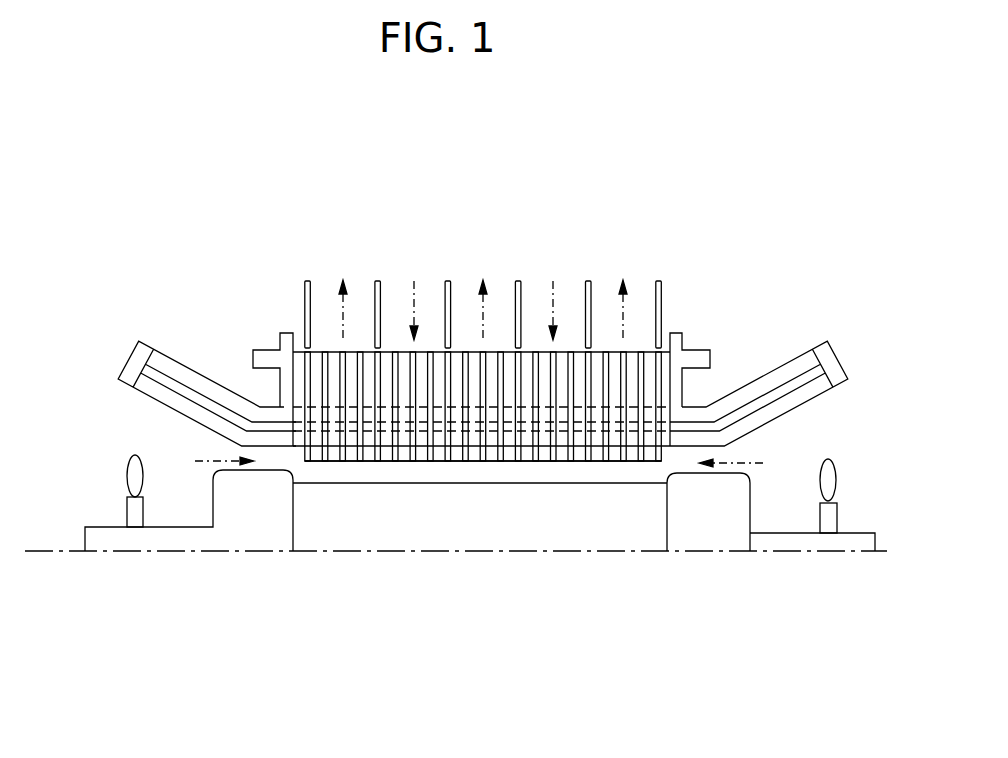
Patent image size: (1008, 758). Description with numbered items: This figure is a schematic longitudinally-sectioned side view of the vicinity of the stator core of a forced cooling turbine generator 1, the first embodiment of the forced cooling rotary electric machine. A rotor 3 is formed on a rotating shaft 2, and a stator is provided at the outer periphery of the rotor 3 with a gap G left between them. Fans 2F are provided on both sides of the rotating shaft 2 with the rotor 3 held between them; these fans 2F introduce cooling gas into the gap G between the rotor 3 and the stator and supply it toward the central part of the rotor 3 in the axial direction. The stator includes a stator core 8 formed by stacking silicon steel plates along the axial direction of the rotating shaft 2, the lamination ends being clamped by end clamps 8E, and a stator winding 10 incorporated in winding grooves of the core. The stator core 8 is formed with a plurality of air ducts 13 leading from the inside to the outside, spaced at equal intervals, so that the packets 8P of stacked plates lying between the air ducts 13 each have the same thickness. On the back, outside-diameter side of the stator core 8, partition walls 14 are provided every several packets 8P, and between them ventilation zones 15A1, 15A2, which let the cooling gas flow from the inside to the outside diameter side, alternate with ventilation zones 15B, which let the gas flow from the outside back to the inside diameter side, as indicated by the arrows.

The forced cooling turbine generator 1 is at (813, 285).
The rotating shaft 2 is at (768, 547).
The fans 2F is at (127, 476).
The rotor 3 is at (505, 517).
The stator core 8 is at (325, 380).
The end clamps 8E is at (253, 357).
The packets 8P is at (388, 367).
The stator winding 10 is at (798, 397).
The air ducts 13 is at (472, 367).
The partition walls 14 is at (304, 295).
The ventilation zone 15A1 is at (365, 300).
The ventilation zone 15A2 is at (505, 300).
The ventilation zones 15B is at (437, 300).
The gap G is at (340, 472).